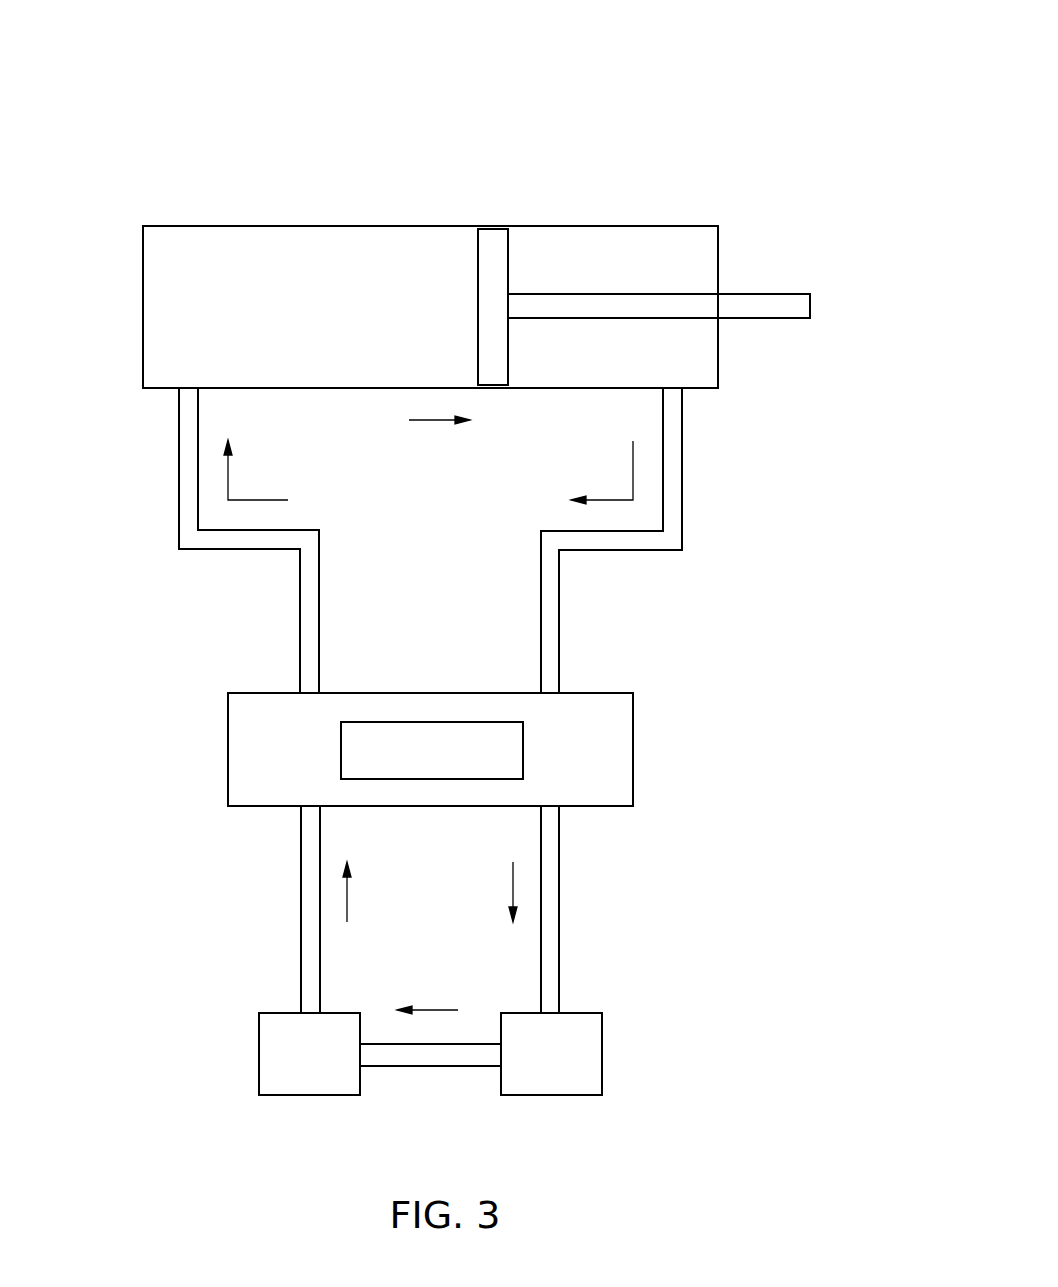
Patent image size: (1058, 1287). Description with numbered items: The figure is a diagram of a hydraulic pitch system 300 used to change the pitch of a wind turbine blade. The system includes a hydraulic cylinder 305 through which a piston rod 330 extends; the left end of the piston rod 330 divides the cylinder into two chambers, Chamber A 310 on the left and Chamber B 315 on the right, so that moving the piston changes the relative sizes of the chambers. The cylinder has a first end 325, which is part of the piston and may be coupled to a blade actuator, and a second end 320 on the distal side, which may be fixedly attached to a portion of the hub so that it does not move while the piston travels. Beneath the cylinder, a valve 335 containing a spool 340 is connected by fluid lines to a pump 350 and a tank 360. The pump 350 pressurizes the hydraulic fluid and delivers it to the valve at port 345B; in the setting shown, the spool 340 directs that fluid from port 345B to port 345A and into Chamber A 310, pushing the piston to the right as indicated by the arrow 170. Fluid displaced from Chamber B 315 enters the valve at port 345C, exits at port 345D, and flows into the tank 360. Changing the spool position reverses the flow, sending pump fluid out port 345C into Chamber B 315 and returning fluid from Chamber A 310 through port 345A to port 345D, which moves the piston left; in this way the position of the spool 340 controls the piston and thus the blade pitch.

The hydraulic pitch system 300 is at (718, 78).
The hydraulic cylinder 305 is at (700, 222).
The Chamber A 310 is at (318, 258).
The Chamber B 315 is at (616, 256).
The second end 320 is at (143, 305).
The first end 325 is at (812, 306).
The piston rod 330 is at (764, 319).
The arrow 170 is at (428, 421).
The valve 335 is at (634, 738).
The spool 340 is at (412, 761).
The port 345A is at (298, 686).
The port 345B is at (297, 813).
The port 345C is at (562, 686).
The port 345D is at (562, 813).
The pump 350 is at (287, 1065).
The tank 360 is at (530, 1065).